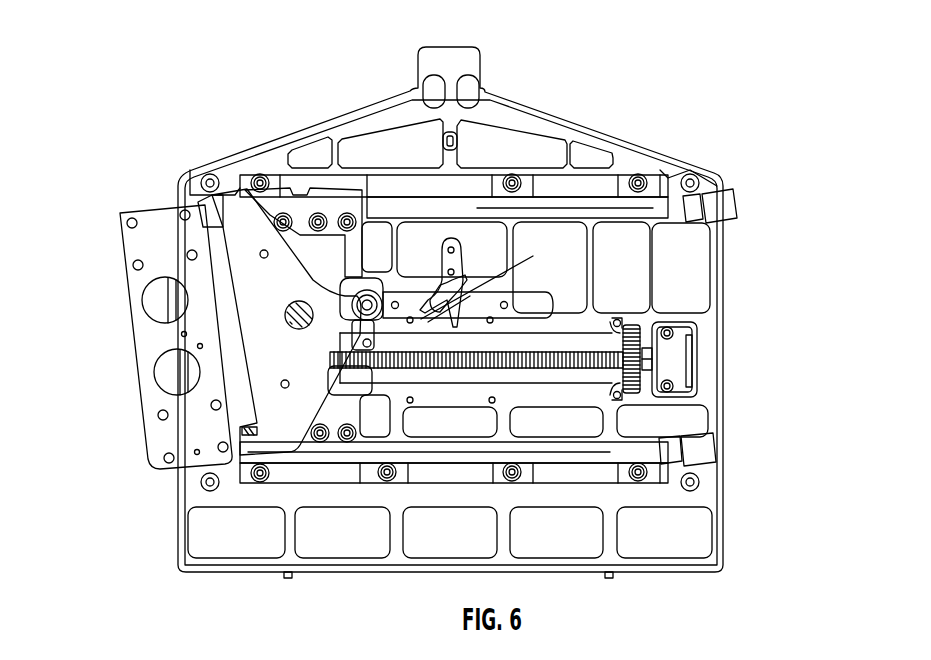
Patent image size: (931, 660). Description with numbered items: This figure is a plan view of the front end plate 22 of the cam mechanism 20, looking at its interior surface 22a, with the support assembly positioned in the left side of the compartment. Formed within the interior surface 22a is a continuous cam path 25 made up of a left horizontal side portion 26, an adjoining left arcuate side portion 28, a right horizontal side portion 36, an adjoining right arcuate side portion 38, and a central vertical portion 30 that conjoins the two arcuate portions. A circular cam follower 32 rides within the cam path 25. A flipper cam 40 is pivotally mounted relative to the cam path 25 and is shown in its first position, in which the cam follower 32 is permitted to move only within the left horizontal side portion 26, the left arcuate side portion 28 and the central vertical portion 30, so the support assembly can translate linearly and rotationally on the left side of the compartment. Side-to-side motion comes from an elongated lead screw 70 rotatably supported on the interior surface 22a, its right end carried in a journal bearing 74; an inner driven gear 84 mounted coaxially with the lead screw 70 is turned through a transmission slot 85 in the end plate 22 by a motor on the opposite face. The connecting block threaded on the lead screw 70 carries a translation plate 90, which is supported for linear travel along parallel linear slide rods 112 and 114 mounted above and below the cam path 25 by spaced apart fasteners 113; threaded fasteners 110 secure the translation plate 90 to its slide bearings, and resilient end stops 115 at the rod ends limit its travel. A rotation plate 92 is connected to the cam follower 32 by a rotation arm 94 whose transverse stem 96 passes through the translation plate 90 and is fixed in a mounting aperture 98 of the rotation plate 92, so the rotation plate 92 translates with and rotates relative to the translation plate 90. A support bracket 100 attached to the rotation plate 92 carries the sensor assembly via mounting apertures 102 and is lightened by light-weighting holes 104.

The cam mechanism 20 is at (113, 122).
The front end plate 22 is at (516, 88).
The interior surface 22a is at (710, 273).
The continuous cam path 25 is at (452, 222).
The left horizontal side portion 26 is at (402, 308).
The left arcuate side portion 28 is at (433, 295).
The central vertical portion 30 is at (438, 248).
The circular cam follower 32 is at (370, 290).
The right horizontal side portion 36 is at (538, 307).
The right arcuate side portion 38 is at (465, 285).
The flipper cam 40 is at (457, 297).
The lead screw 70 is at (512, 368).
The right side journal bearing 74 is at (670, 360).
The inner driven gear 84 is at (632, 395).
The transmission slot 85 is at (630, 325).
The translation plate 90 is at (336, 210).
The rotation plate 92 is at (277, 437).
The rotation arm 94 is at (375, 320).
The transverse stem 96 is at (298, 302).
The mounting aperture 98 is at (298, 330).
The support bracket 100 is at (165, 432).
The mounting apertures 102 is at (180, 215).
The light-weighting holes 104 is at (158, 305).
The threaded fasteners 110 is at (318, 212).
The linear slide rod 112 is at (660, 207).
The spaced apart fasteners 113 is at (527, 183).
The linear slide rod 114 is at (438, 455).
The resilient end stops 115 is at (727, 198).